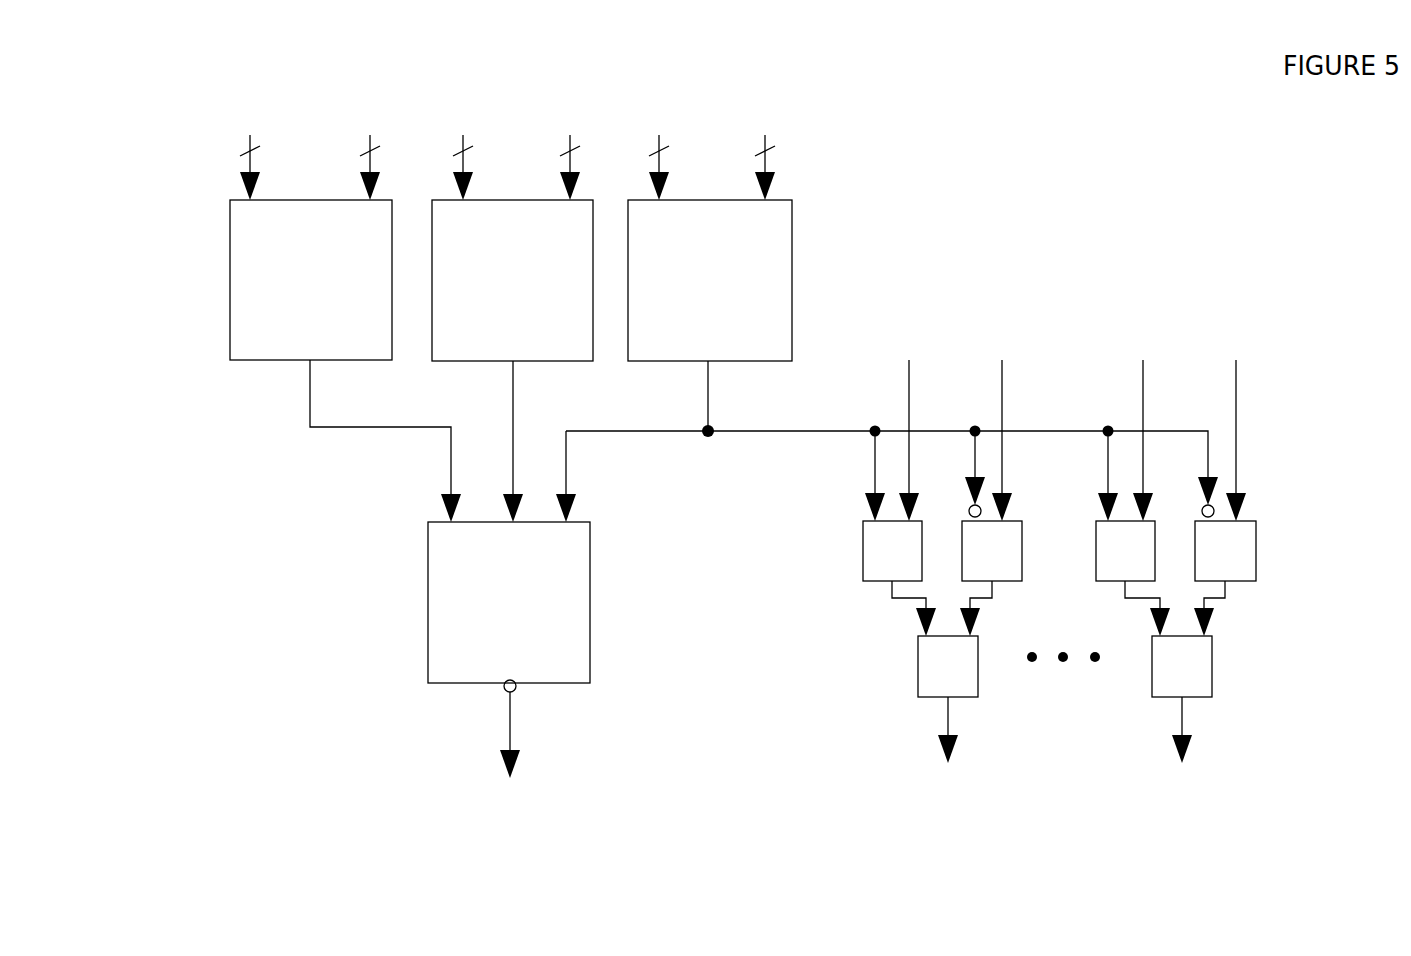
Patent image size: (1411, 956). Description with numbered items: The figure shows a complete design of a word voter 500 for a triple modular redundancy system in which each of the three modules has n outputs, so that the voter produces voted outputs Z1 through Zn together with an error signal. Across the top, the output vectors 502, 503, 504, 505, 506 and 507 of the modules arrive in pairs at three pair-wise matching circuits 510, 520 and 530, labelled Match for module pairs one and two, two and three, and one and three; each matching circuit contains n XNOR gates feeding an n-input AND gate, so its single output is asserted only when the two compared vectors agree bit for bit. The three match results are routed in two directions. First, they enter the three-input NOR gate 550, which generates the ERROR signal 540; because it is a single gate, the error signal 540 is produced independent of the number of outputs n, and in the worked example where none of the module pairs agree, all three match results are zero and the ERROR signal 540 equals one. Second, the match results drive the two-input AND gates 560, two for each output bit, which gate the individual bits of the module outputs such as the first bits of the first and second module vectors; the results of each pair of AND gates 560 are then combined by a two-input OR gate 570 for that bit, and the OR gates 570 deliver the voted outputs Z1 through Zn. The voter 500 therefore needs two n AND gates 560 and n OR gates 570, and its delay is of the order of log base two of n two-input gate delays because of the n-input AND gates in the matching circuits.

The word voter 500 is at (313, 873).
The output vector 502 is at (248, 76).
The output vector 503 is at (368, 76).
The output vector 504 is at (461, 76).
The output vector 505 is at (568, 76).
The output vector 506 is at (657, 76).
The output vector 507 is at (761, 76).
The pair-wise matching circuit 510 is at (228, 246).
The pair-wise matching circuit 520 is at (557, 365).
The pair-wise matching circuit 530 is at (790, 240).
The error signal 540 is at (508, 728).
The 3-input NOR gate 550 is at (425, 572).
The 2-input AND gate 560 is at (866, 555).
The 2-input OR gate 570 is at (915, 677).